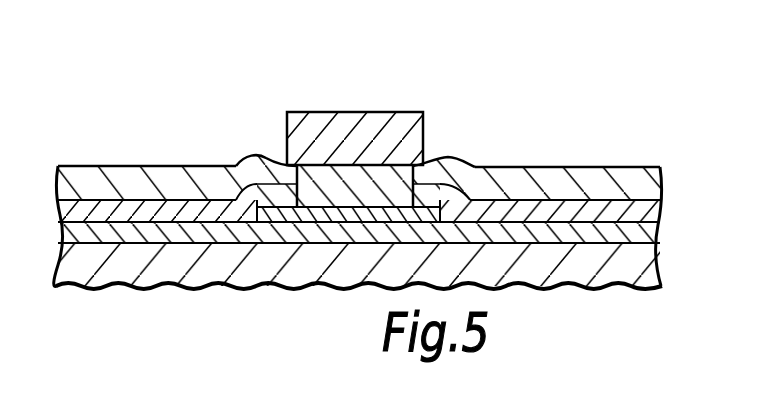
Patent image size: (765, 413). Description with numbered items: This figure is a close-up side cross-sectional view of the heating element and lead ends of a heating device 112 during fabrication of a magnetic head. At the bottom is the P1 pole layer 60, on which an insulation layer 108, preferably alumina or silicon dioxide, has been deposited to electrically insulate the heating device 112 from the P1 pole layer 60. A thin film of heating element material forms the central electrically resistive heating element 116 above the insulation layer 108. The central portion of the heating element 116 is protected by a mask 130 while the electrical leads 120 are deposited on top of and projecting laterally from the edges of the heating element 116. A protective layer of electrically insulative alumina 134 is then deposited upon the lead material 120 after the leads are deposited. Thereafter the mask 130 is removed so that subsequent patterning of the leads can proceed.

The P1 pole layer 60 is at (127, 272).
The insulation layer 108 is at (248, 233).
The heating device 112 is at (271, 140).
The heating element 116 is at (360, 215).
The electrical leads 120 is at (117, 200).
The mask 130 is at (360, 125).
The protective layer of electrically insulative alumina 134 is at (230, 168).